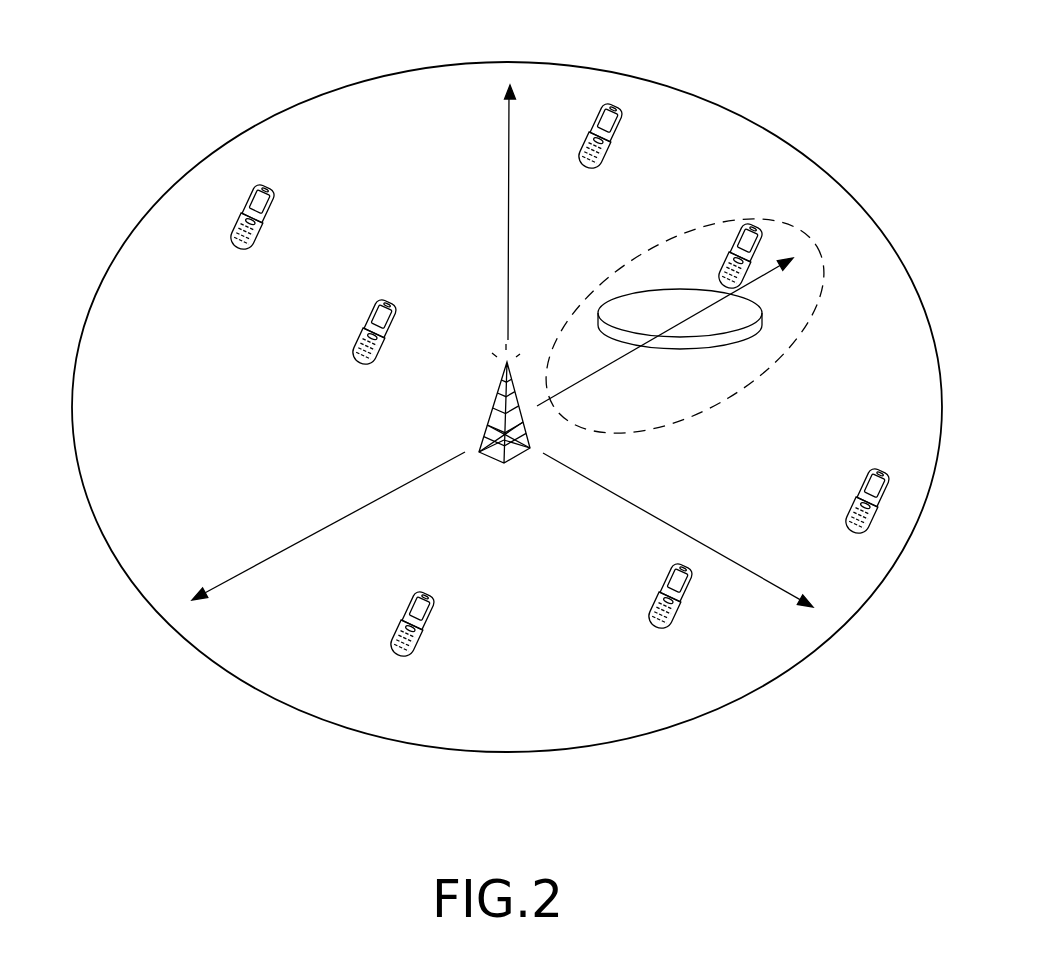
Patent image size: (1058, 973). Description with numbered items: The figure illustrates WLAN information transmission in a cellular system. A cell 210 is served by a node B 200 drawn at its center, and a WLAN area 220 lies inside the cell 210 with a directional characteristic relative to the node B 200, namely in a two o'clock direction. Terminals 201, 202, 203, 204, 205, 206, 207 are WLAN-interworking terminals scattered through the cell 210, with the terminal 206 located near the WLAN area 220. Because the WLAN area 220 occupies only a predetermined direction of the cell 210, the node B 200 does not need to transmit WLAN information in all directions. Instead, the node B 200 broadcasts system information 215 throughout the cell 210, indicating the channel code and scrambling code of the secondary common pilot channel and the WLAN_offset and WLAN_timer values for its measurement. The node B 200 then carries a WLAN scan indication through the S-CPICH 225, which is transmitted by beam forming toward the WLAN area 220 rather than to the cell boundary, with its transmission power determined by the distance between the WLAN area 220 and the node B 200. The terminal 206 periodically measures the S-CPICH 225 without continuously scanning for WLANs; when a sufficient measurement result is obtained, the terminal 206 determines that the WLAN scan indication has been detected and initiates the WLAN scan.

The node B 200 is at (488, 416).
The terminal 201 is at (235, 220).
The terminal 202 is at (360, 336).
The terminal 203 is at (396, 627).
The terminal 204 is at (654, 604).
The terminal 205 is at (852, 507).
The terminal 206 is at (750, 228).
The terminal 207 is at (586, 140).
The cell 210 is at (511, 61).
The system information 215 is at (310, 470).
The WLAN area 220 is at (762, 320).
The secondary common pilot channel (S-CPICH) 225 is at (691, 413).